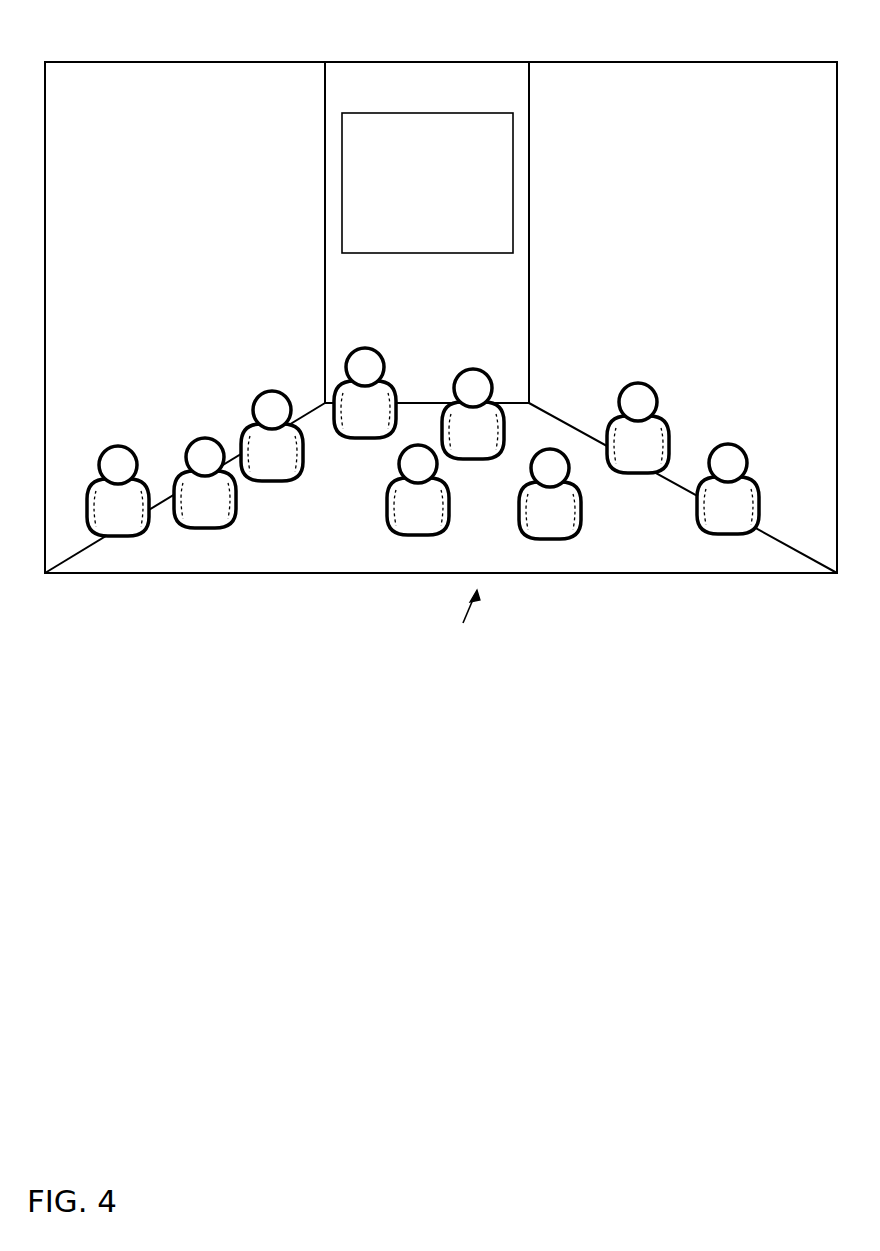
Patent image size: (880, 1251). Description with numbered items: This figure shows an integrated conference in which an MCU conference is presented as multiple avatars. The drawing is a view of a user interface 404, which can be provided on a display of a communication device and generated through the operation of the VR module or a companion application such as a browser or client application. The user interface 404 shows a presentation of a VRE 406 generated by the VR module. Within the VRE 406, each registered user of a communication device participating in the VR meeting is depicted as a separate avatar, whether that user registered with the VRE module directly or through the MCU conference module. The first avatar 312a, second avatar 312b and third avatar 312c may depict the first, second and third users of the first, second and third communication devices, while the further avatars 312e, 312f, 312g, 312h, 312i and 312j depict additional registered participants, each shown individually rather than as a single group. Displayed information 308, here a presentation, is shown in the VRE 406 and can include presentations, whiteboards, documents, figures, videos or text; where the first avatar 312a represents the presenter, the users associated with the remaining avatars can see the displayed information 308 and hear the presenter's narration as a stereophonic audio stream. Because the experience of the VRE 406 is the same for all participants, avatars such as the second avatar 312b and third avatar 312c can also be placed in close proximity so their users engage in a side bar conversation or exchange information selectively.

The displayed information 308 is at (427, 134).
The first avatar 312a is at (377, 384).
The second avatar 312b is at (272, 415).
The third avatar 312c is at (396, 531).
The avatar 312e is at (200, 464).
The avatar 312f is at (115, 472).
The avatar 312g is at (477, 398).
The avatar 312h is at (548, 472).
The avatar 312i is at (632, 411).
The avatar 312j is at (722, 472).
The user interface 404 is at (441, 347).
The virtual reality environment (VRE) 406 is at (469, 622).